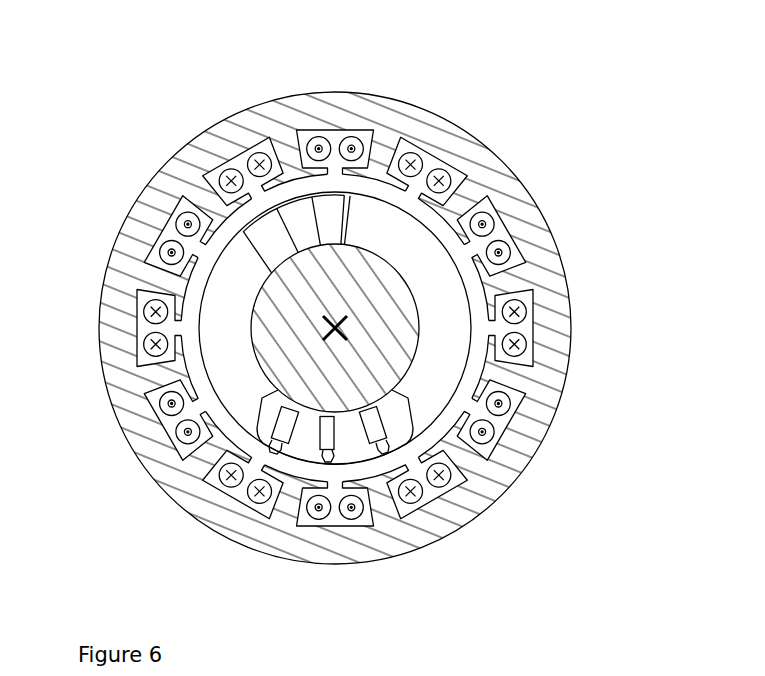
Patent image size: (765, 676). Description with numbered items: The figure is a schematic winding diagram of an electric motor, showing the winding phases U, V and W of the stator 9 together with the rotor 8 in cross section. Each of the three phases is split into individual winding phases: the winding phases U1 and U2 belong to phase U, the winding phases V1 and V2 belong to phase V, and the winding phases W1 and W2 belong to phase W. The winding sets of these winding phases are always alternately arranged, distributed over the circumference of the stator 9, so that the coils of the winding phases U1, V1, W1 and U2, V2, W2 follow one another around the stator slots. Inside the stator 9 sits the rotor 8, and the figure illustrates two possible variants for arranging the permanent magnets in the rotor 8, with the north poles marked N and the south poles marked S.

The rotor 8 is at (418, 253).
The stator 9 is at (528, 212).
The winding phase U1 is at (220, 175).
The winding phase U2 is at (159, 251).
The winding phase V1 is at (143, 342).
The winding phase V2 is at (180, 442).
The winding phase W1 is at (353, 136).
The winding phase W2 is at (317, 136).